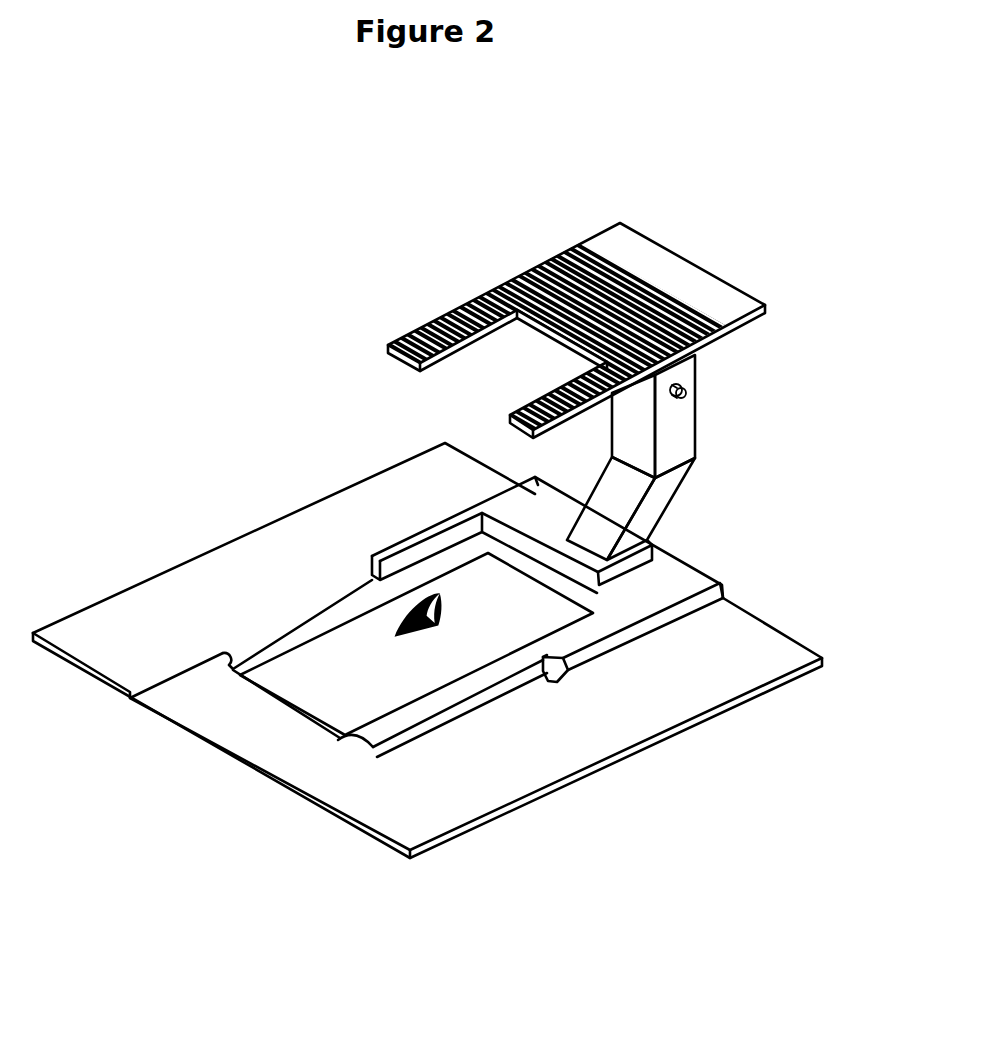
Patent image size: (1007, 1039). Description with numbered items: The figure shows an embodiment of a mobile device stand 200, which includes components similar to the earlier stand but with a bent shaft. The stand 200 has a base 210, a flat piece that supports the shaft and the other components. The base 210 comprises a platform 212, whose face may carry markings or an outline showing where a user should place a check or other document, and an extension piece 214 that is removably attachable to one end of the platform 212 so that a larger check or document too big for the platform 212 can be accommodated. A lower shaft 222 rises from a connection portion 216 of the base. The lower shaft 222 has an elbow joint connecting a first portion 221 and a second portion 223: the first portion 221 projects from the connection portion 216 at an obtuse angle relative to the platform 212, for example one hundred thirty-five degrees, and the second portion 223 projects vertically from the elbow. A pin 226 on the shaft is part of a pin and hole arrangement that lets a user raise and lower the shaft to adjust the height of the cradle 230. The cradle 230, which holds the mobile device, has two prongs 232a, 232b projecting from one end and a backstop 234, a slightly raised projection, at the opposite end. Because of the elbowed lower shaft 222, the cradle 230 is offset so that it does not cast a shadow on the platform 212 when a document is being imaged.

The stand 200 is at (236, 163).
The base 210 is at (212, 557).
The platform 212 is at (277, 678).
The extension piece 214 is at (252, 748).
The connection portion 216 is at (645, 545).
The first portion 221 is at (660, 510).
The lower shaft 222 is at (716, 467).
The second portion 223 is at (697, 437).
The pin 226 is at (688, 397).
The cradle 230 is at (521, 256).
The prong 232a is at (388, 343).
The prong 232b is at (512, 414).
The backstop 234 is at (757, 297).